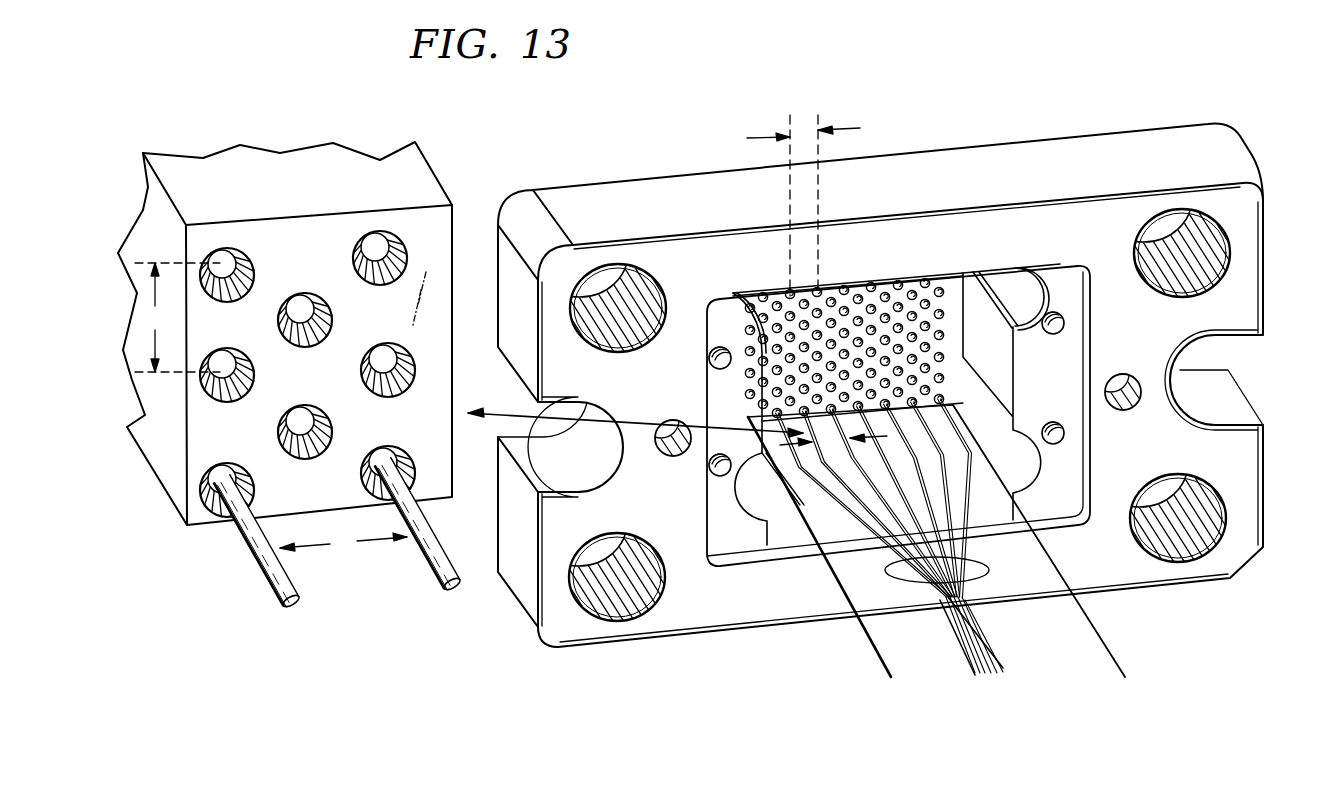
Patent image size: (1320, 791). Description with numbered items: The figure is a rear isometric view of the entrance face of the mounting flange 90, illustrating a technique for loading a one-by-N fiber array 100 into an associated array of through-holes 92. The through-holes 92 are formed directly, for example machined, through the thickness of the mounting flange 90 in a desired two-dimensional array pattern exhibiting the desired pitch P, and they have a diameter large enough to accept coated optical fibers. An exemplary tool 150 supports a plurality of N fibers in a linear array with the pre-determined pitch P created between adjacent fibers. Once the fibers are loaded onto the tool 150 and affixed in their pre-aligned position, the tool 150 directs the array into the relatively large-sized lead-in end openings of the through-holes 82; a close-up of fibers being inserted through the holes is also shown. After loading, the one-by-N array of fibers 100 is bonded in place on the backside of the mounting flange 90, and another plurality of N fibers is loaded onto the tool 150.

The through-holes 82 is at (866, 313).
The mounting flange 90 is at (1005, 155).
The through-holes 92 is at (377, 257).
The 1×N fiber array 100 is at (437, 570).
The tool 150 is at (1095, 648).